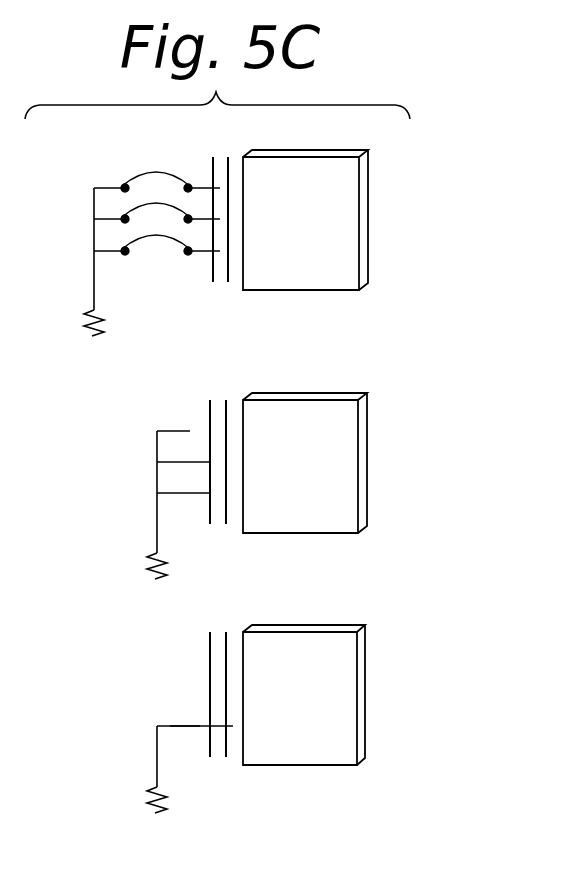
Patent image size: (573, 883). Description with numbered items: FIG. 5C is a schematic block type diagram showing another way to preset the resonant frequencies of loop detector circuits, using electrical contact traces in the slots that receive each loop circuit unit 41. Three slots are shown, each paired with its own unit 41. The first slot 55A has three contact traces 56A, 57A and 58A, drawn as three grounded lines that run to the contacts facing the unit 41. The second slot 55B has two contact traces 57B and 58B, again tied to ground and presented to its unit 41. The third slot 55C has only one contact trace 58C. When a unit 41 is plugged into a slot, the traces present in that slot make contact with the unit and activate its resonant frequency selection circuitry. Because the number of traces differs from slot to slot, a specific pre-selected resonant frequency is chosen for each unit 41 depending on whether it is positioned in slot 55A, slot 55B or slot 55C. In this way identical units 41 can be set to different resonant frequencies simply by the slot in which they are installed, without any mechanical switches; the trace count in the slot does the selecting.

The loop circuit unit 41 is at (368, 215).
The slot 55A is at (86, 261).
The contact trace 56A is at (135, 175).
The contact trace 57A is at (162, 204).
The contact trace 58A is at (165, 233).
The slot 55B is at (116, 525).
The contact trace 57B is at (183, 462).
The contact trace 58B is at (185, 493).
The slot 55C is at (116, 759).
The contact trace 58C is at (185, 726).